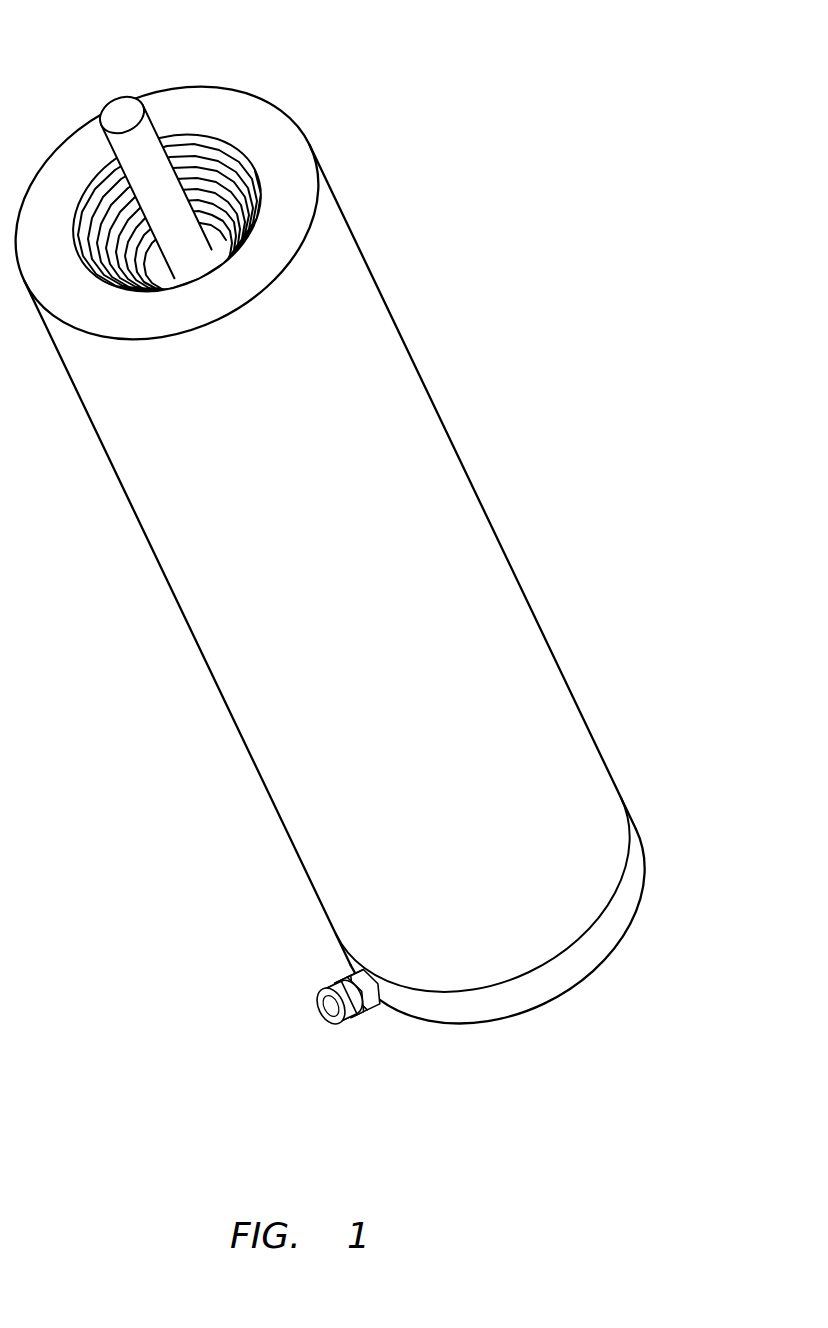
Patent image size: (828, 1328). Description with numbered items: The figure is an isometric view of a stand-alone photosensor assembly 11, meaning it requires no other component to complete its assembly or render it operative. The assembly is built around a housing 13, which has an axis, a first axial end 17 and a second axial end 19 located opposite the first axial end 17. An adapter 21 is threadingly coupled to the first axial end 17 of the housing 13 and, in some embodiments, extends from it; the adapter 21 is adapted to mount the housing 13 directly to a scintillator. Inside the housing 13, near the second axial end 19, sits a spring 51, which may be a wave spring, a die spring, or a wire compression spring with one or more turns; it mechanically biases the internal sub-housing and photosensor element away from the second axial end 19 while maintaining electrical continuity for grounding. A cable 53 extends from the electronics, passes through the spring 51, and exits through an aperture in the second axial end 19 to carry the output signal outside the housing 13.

The stand-alone photosensor assembly 11 is at (351, 516).
The housing 13 is at (403, 373).
The first axial end 17 is at (628, 810).
The second axial end 19 is at (280, 127).
The adapter 21 is at (632, 883).
The spring 51 is at (207, 160).
The cable 53 is at (122, 112).